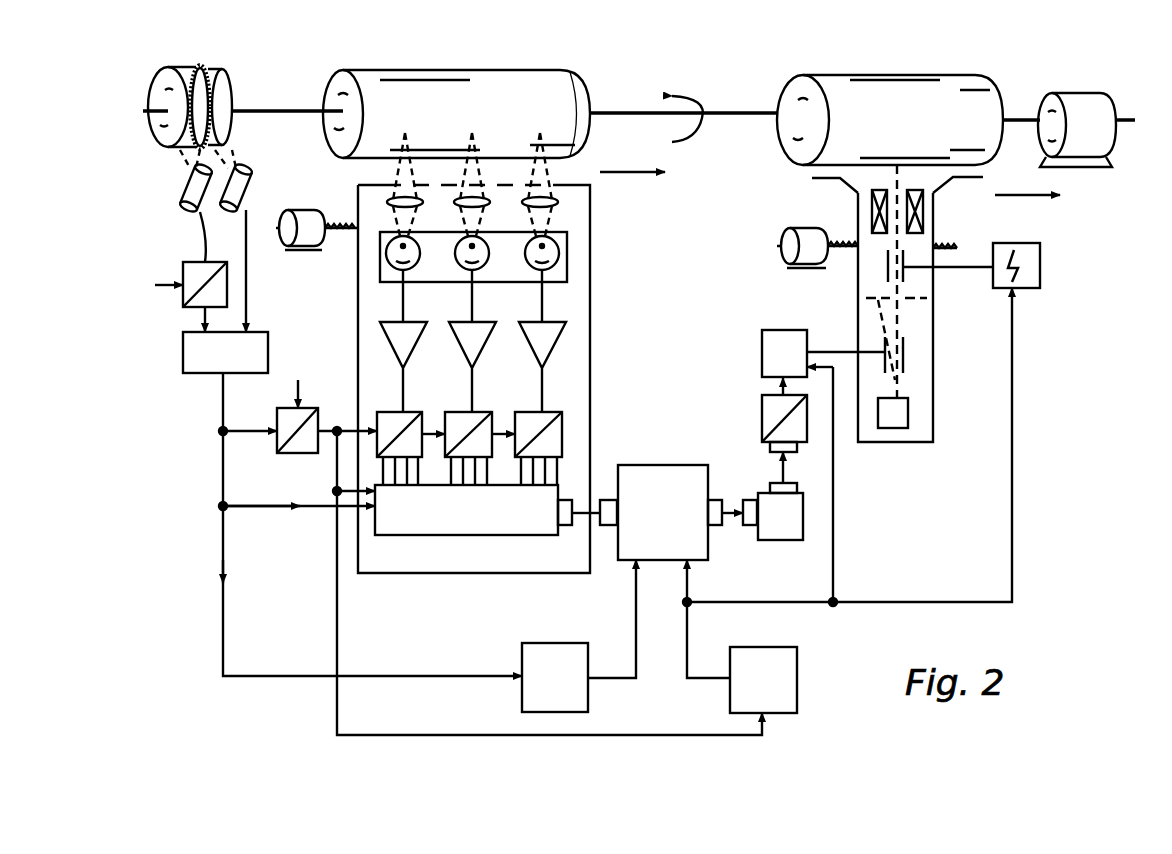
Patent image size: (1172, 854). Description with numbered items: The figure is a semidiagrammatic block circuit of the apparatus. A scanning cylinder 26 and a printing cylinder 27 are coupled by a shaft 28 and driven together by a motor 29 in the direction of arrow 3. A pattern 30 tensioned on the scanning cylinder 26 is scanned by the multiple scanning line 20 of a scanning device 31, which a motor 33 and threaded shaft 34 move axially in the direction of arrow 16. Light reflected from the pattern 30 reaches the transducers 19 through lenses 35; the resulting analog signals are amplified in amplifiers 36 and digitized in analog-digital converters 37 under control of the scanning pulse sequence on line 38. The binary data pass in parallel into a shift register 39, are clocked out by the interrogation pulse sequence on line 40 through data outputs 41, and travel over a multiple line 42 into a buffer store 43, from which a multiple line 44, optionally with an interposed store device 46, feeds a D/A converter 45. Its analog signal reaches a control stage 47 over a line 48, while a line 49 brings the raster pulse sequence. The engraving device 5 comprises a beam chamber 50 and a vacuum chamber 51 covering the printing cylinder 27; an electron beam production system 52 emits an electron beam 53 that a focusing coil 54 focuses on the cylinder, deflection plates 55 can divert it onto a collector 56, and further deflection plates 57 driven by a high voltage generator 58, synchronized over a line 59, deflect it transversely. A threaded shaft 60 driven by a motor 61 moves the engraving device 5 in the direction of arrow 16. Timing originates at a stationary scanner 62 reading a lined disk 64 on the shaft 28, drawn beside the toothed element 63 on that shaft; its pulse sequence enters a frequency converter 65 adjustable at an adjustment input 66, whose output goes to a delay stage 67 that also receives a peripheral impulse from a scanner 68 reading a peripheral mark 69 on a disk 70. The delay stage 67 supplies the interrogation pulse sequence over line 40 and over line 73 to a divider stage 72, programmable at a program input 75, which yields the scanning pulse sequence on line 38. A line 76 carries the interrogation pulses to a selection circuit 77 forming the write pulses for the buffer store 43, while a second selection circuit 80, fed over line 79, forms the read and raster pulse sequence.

The arrow 3 is at (698, 122).
The engraving device 5 is at (918, 435).
The arrow 16 is at (615, 170).
The transducers 19 is at (559, 250).
The multiple scanning line 20 is at (508, 278).
The scanning cylinder 26 is at (590, 88).
The printing cylinder 27 is at (1002, 98).
The shaft 28 is at (276, 111).
The motor 29 is at (1112, 104).
The pattern 30 is at (480, 70).
The scanning device 31 is at (592, 344).
The motor 33 is at (310, 207).
The threaded shaft 34 is at (332, 240).
The lenses 35 is at (558, 202).
The amplifiers 36 is at (408, 346).
The analog-digital converters 37 is at (384, 394).
The line 38 is at (326, 413).
The shift register 39 is at (456, 534).
The line 40 is at (268, 514).
The data outputs 41 is at (564, 528).
The multiple line 42 is at (601, 536).
The buffer store 43 is at (648, 460).
The multiple line 44 is at (728, 502).
The D/A converter 45 is at (762, 422).
The store device 46 is at (782, 537).
The control stage 47 is at (776, 324).
The line 48 is at (776, 384).
The line 49 is at (836, 544).
The beam chamber 50 is at (924, 344).
The vacuum chamber 51 is at (941, 184).
The electron beam production system 52 is at (894, 435).
The electron beam 53 is at (906, 394).
The focusing coil 54 is at (872, 216).
The deflection plates 55 is at (908, 369).
The collector 56 is at (920, 308).
The deflection plates 57 is at (912, 282).
The high voltage generator 58 is at (1040, 264).
The line 59 is at (1014, 398).
The threaded shaft 60 is at (952, 242).
The motor 61 is at (790, 230).
The stationary scanner 62 is at (182, 192).
The toothed wheel 63 is at (199, 70).
The disk 64 is at (160, 86).
The frequency converter 65 is at (190, 260).
The adjustment input 66 is at (152, 288).
The delay stage 67 is at (204, 378).
The scanner 68 is at (240, 172).
The peripheral mark 69 is at (232, 120).
The disk 70 is at (224, 74).
The divider stage 72 is at (302, 454).
The line 73 is at (252, 434).
The program input 75 is at (290, 404).
The line 76 is at (408, 672).
The selection circuit 77 is at (530, 640).
The line 79 is at (642, 734).
The selection circuit 80 is at (800, 668).